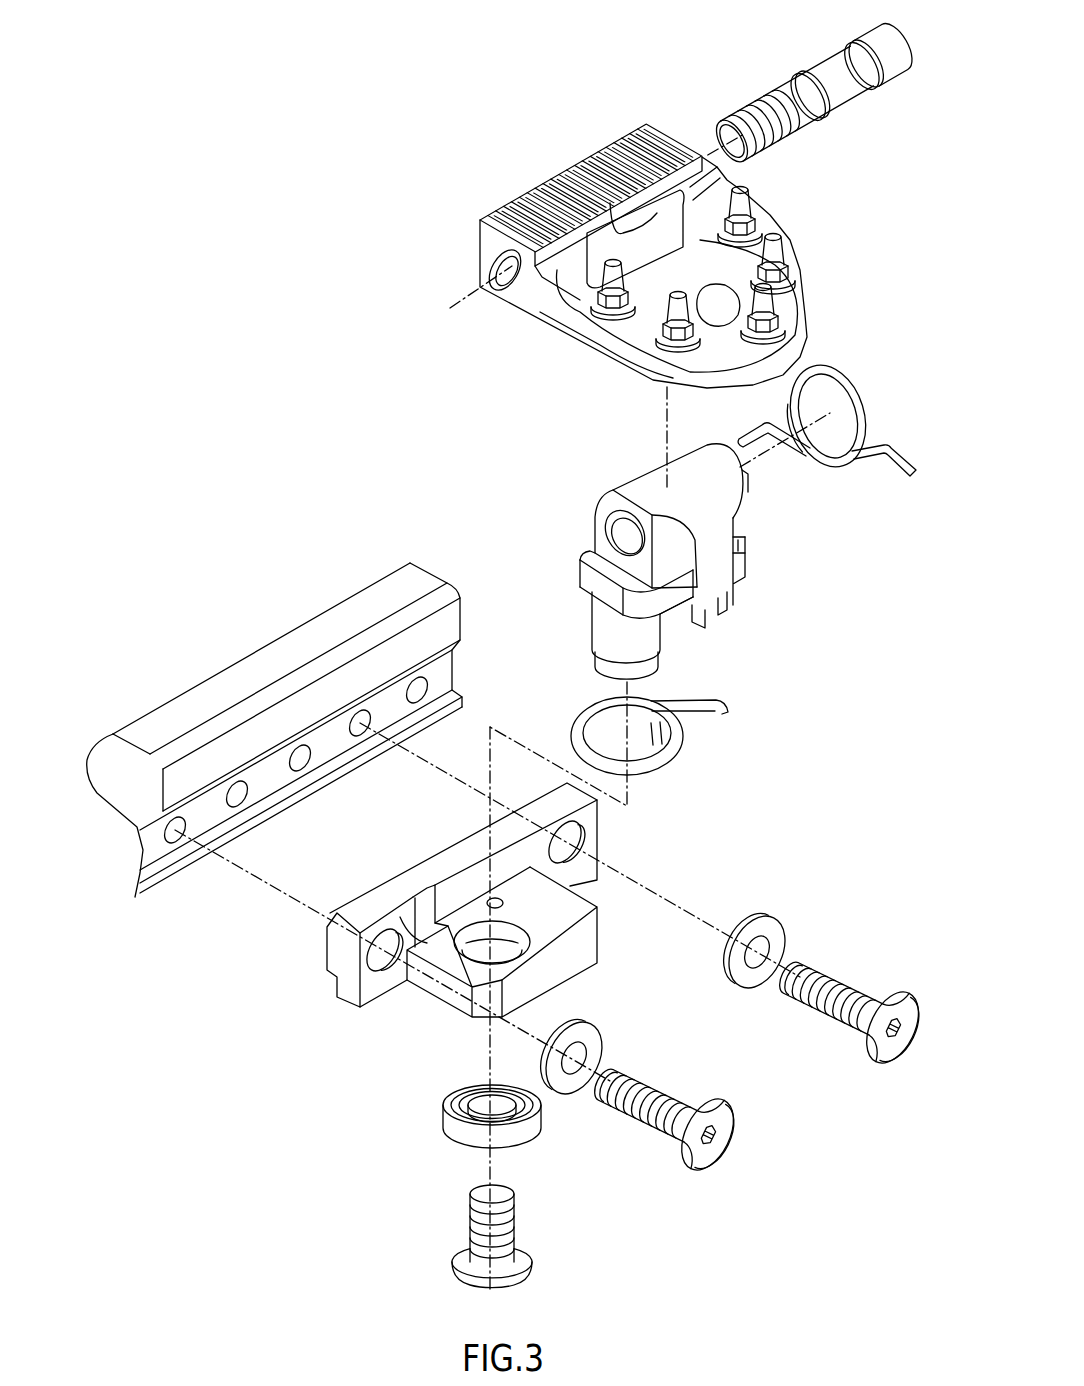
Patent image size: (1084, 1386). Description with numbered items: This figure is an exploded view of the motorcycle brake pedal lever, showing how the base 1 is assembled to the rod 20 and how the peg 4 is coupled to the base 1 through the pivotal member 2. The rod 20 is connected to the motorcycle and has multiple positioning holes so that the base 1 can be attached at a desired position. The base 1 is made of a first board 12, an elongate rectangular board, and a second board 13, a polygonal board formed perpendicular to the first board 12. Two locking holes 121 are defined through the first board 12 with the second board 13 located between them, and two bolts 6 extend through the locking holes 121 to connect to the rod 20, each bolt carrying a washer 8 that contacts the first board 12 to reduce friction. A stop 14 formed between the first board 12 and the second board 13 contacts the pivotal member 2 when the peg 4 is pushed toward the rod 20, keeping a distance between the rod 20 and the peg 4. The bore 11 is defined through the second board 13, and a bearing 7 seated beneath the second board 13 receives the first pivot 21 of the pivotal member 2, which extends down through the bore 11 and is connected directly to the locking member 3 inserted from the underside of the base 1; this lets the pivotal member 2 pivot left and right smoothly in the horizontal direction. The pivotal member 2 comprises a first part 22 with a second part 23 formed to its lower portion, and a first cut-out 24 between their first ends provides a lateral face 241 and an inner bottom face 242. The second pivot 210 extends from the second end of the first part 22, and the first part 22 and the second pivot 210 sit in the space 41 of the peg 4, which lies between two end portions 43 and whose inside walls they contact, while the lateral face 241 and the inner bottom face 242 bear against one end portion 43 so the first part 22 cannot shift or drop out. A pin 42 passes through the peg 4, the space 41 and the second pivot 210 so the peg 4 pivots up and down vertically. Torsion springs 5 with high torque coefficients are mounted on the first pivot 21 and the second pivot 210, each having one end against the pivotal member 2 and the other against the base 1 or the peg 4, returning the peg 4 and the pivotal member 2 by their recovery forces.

The base 1 is at (464, 1008).
The bore 11 is at (483, 953).
The first board 12 is at (451, 927).
The locking holes 121 is at (578, 860).
The second board 13 is at (457, 1010).
The stop 14 is at (417, 913).
The pivotal member 2 is at (663, 565).
The first pivot 21 is at (597, 633).
The second pivot 210 is at (747, 478).
The first part 22 is at (727, 520).
The second part 23 is at (677, 620).
The first cut-out 24 is at (559, 528).
The lateral face 241 is at (597, 517).
The inner bottom face 242 is at (602, 573).
The rod 20 is at (267, 665).
The locking member 3 is at (523, 1250).
The peg 4 is at (588, 271).
The space 41 is at (608, 236).
The pin 42 is at (777, 97).
The end portions 43 is at (470, 240).
The torsion springs 5 is at (593, 713).
The bolts 6 is at (820, 960).
The bearing 7 is at (453, 1128).
The washer 8 is at (780, 933).